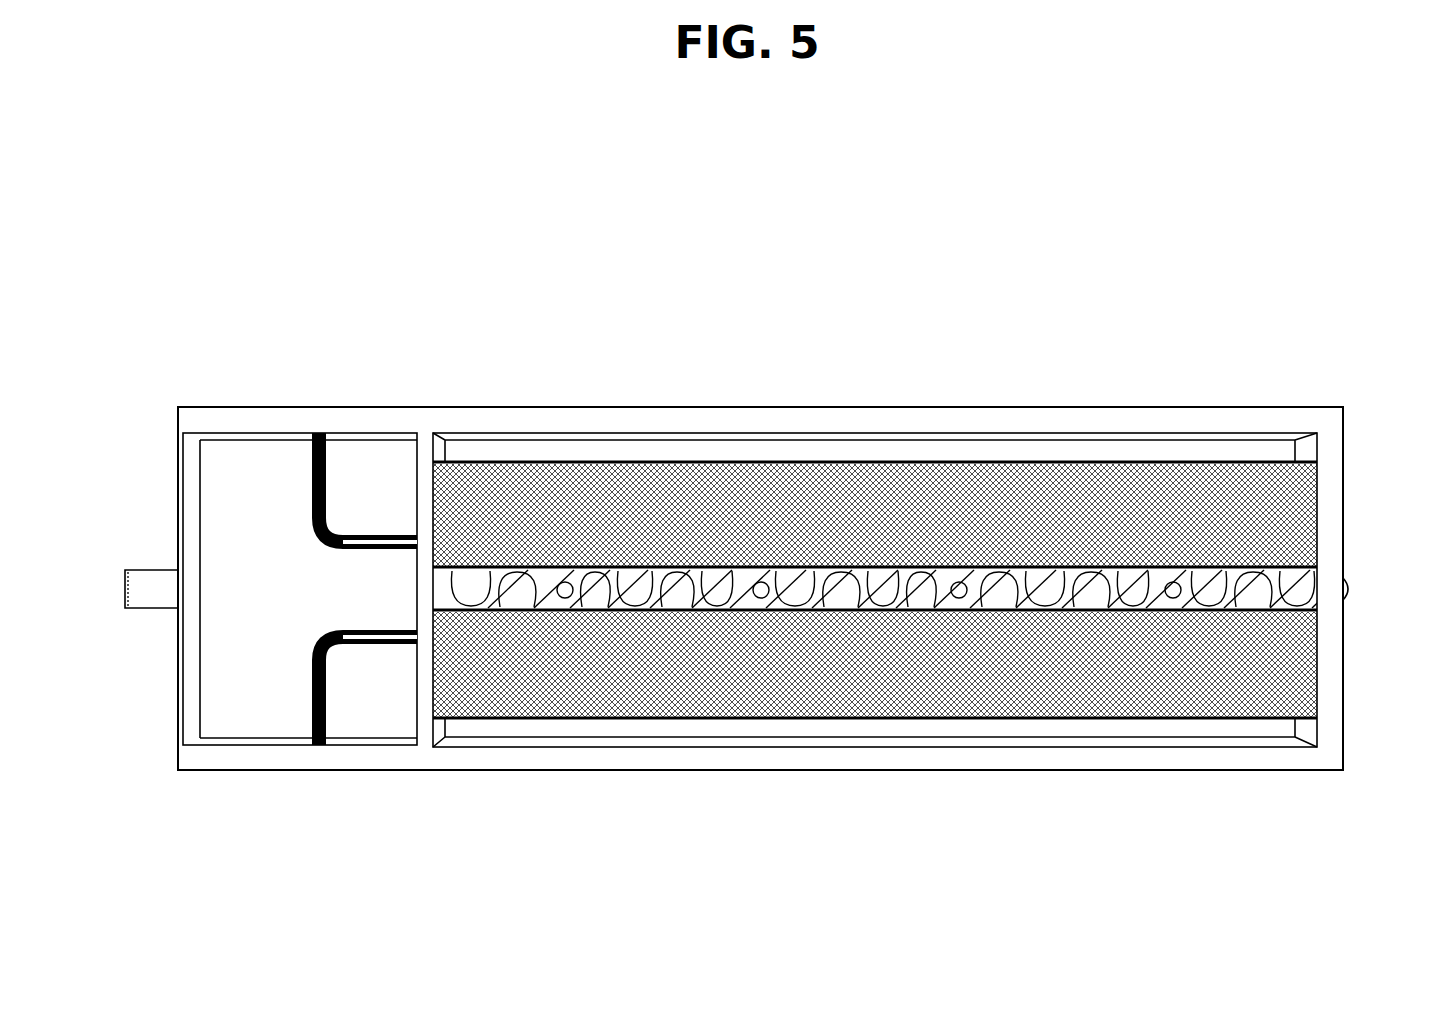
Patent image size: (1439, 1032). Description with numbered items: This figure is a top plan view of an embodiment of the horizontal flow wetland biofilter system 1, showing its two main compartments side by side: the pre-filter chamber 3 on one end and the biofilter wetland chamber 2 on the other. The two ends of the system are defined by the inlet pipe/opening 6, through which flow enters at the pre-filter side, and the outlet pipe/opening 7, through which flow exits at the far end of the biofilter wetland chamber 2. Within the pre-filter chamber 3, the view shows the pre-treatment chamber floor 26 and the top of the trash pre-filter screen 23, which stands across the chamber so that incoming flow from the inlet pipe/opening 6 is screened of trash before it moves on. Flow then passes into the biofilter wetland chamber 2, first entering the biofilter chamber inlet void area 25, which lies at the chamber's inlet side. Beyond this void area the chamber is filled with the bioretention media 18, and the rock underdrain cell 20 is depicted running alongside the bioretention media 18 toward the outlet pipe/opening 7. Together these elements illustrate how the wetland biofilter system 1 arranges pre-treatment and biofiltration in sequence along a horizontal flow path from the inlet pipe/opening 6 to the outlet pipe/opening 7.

The wetland biofilter system 1 is at (1343, 785).
The biofilter wetland chamber 2 is at (892, 606).
The pre-filter chamber 3 is at (301, 601).
The inlet pipe/opening 6 is at (155, 590).
The outlet pipe/opening 7 is at (1350, 580).
The bioretention media 18 is at (801, 681).
The rock underdrain cell 20 is at (1135, 593).
The trash pre-filter screen 23 is at (249, 581).
The biofilter chamber inlet void area 25 is at (551, 733).
The pre-treatment chamber floor 26 is at (230, 688).